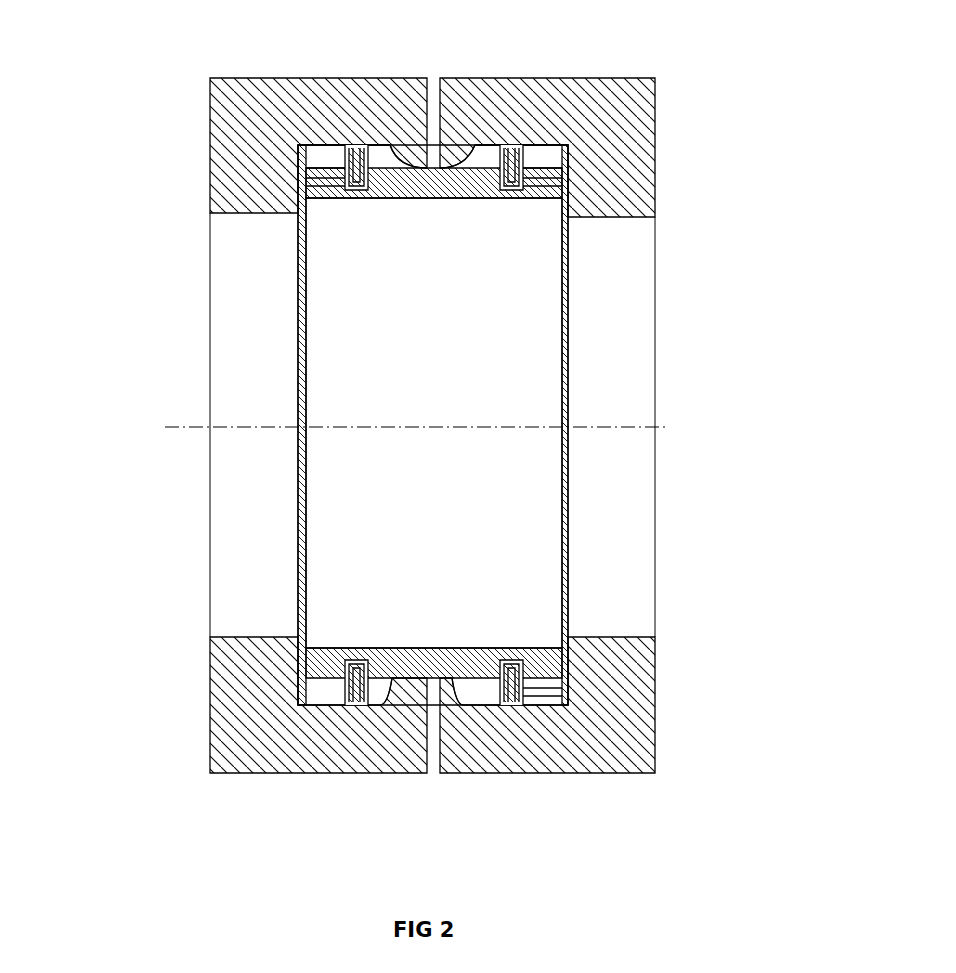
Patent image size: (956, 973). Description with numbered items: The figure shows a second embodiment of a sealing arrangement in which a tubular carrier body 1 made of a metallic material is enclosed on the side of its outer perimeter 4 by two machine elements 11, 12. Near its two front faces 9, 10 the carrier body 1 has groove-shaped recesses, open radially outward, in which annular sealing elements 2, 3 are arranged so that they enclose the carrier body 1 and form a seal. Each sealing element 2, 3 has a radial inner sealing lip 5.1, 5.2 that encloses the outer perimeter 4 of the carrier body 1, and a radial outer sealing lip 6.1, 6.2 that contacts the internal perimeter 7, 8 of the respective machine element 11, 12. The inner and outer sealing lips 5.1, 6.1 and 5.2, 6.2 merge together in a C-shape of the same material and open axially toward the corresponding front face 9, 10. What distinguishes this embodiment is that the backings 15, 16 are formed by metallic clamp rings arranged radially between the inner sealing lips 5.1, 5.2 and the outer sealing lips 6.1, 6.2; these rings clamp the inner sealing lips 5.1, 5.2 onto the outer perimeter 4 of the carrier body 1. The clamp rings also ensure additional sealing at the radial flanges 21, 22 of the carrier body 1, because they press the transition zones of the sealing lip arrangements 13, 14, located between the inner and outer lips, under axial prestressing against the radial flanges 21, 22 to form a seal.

The carrier body 1 is at (425, 187).
The sealing element 2 is at (362, 145).
The sealing element 3 is at (505, 150).
The outer perimeter 4 is at (548, 178).
The inner sealing lip 5.1 is at (352, 658).
The inner sealing lip 5.2 is at (508, 660).
The outer sealing lip 6.1 is at (348, 705).
The outer sealing lip 6.2 is at (513, 705).
The internal perimeter 7 is at (390, 147).
The internal perimeter 8 is at (475, 147).
The front face 9 is at (322, 190).
The front face 10 is at (545, 193).
The machine element 11 is at (255, 195).
The machine element 12 is at (633, 158).
The sealing lip arrangement 13 is at (341, 165).
The sealing lip arrangement 14 is at (520, 688).
The backing 15 is at (323, 175).
The backing 16 is at (520, 178).
The radial flange 21 is at (372, 680).
The radial flange 22 is at (492, 690).